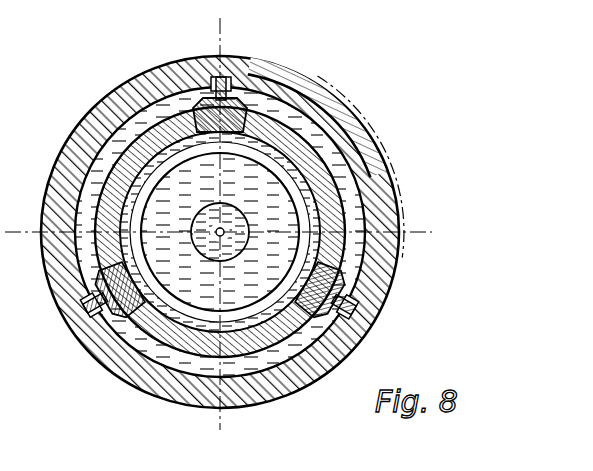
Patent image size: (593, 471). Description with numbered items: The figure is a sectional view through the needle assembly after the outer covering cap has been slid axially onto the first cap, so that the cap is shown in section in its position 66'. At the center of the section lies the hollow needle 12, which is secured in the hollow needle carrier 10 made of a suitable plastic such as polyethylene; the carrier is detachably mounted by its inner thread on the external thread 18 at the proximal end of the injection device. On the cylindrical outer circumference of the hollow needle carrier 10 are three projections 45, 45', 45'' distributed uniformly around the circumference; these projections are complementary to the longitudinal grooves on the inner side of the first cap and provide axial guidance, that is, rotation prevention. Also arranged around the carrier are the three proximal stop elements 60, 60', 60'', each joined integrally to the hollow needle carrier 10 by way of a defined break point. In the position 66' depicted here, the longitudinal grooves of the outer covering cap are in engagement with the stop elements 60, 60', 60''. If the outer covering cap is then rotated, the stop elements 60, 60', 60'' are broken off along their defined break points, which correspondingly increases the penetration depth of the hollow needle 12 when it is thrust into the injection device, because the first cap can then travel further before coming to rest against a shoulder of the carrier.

The hollow needle carrier 10 is at (197, 202).
The hollow needle 12 is at (226, 226).
The external thread 18 is at (160, 293).
The projection 45 is at (262, 87).
The projection 45' is at (365, 287).
The projection 45'' is at (115, 332).
The proximal stop element 60 is at (251, 56).
The proximal stop element 60' is at (385, 311).
The proximal stop element 60'' is at (71, 324).
The outer covering cap position 66' is at (348, 158).